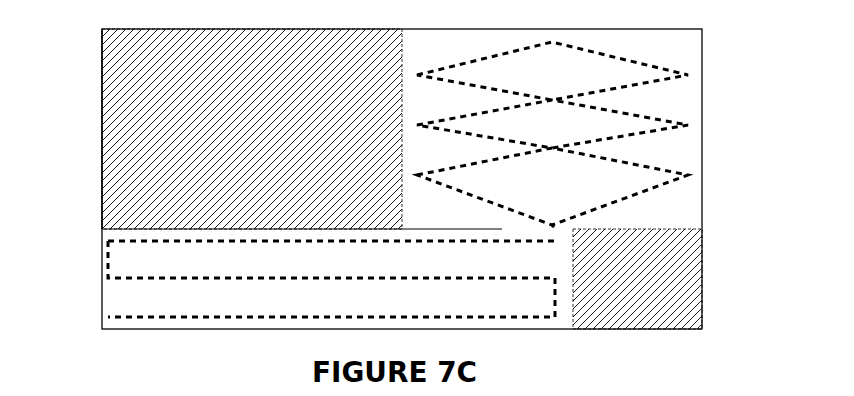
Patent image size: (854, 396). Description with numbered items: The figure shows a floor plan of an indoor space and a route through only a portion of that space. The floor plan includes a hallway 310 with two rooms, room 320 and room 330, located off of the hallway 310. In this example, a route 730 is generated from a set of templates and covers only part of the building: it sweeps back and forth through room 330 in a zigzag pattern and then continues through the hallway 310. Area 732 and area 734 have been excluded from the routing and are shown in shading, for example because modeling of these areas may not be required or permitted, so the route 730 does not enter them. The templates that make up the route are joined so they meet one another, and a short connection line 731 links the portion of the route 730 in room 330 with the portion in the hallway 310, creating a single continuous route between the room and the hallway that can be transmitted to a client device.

The hallway 310 is at (292, 329).
The room 320 is at (252, 129).
The room 330 is at (552, 129).
The route 730 is at (690, 175).
The connection line 731 is at (553, 226).
The area 732 is at (702, 275).
The area 734 is at (102, 150).